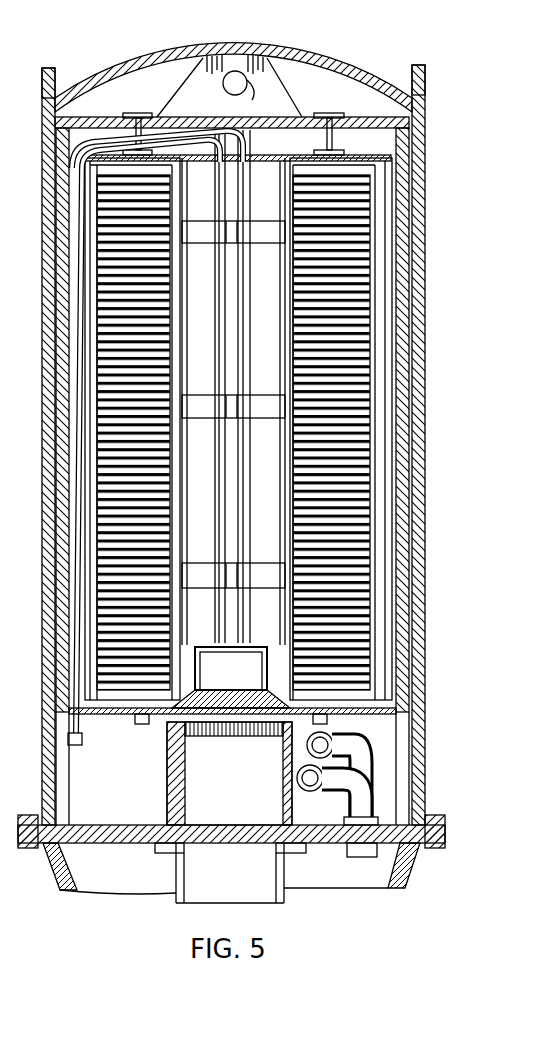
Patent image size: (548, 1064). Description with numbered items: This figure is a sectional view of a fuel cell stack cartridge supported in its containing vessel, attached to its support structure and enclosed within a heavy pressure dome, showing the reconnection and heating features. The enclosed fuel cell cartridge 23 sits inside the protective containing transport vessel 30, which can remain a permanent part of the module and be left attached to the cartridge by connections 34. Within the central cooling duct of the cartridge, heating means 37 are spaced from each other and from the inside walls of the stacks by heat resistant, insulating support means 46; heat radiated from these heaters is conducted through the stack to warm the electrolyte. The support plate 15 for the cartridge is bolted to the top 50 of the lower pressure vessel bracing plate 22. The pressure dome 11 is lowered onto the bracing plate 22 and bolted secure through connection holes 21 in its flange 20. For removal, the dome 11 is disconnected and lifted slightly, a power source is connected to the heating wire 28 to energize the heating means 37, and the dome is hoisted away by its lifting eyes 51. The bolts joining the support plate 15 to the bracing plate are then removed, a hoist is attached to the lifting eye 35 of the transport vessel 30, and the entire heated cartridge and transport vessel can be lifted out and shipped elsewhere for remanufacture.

The pressure dome 11 is at (398, 268).
The support plate 15 is at (104, 714).
The flange 20 is at (444, 820).
The connection holes 21 is at (444, 838).
The lower pressure vessel bracing plate 22 is at (116, 843).
The fuel cell cartridge 23 is at (120, 323).
The heating wire 28 is at (78, 190).
The transport vessel 30 is at (62, 250).
The connections 34 is at (138, 113).
The lifting eye 35 is at (262, 52).
The heating means 37 is at (228, 345).
The support means 46 is at (237, 232).
The top of the lower pressure vessel bracing plate 50 is at (172, 768).
The lifting eyes 51 is at (50, 70).